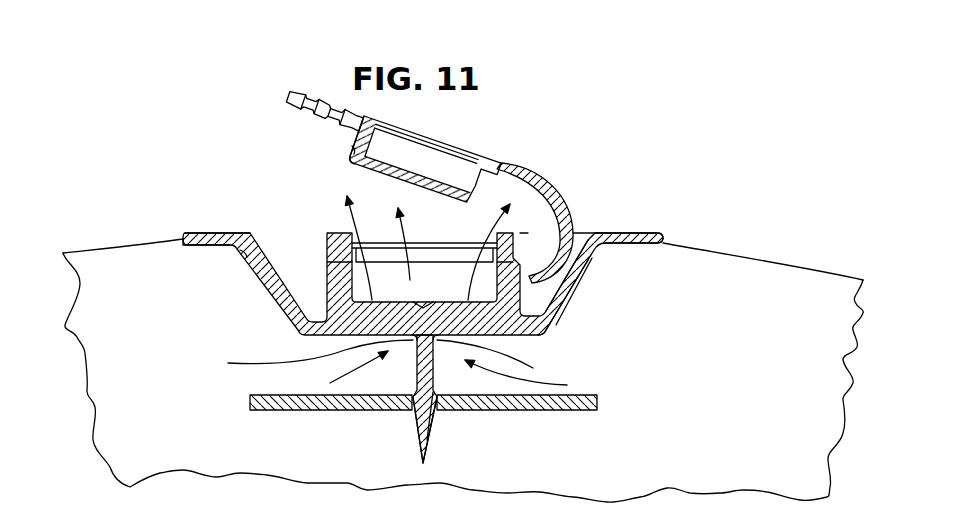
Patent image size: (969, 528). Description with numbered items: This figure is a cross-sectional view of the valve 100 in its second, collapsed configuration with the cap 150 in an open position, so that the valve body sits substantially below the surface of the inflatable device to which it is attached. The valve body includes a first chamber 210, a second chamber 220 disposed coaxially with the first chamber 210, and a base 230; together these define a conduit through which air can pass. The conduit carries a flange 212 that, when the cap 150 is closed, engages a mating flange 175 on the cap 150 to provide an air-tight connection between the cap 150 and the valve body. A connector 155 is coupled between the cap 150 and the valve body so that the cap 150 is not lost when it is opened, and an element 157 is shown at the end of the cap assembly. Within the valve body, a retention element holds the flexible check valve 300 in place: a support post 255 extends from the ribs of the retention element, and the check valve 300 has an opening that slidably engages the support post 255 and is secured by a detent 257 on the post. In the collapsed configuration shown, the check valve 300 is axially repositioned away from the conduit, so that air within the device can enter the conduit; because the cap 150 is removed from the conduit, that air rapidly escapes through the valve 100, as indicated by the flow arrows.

The valve 100 is at (138, 192).
The cap 150 is at (478, 152).
The connector 155 is at (550, 187).
The cable 157 is at (290, 92).
The flange 175 is at (345, 150).
The first chamber 210 is at (340, 279).
The flange 212 is at (360, 233).
The second chamber 220 is at (553, 311).
The base 230 is at (640, 233).
The support post 255 is at (413, 434).
The detent 257 is at (433, 434).
The check valve 300 is at (580, 405).